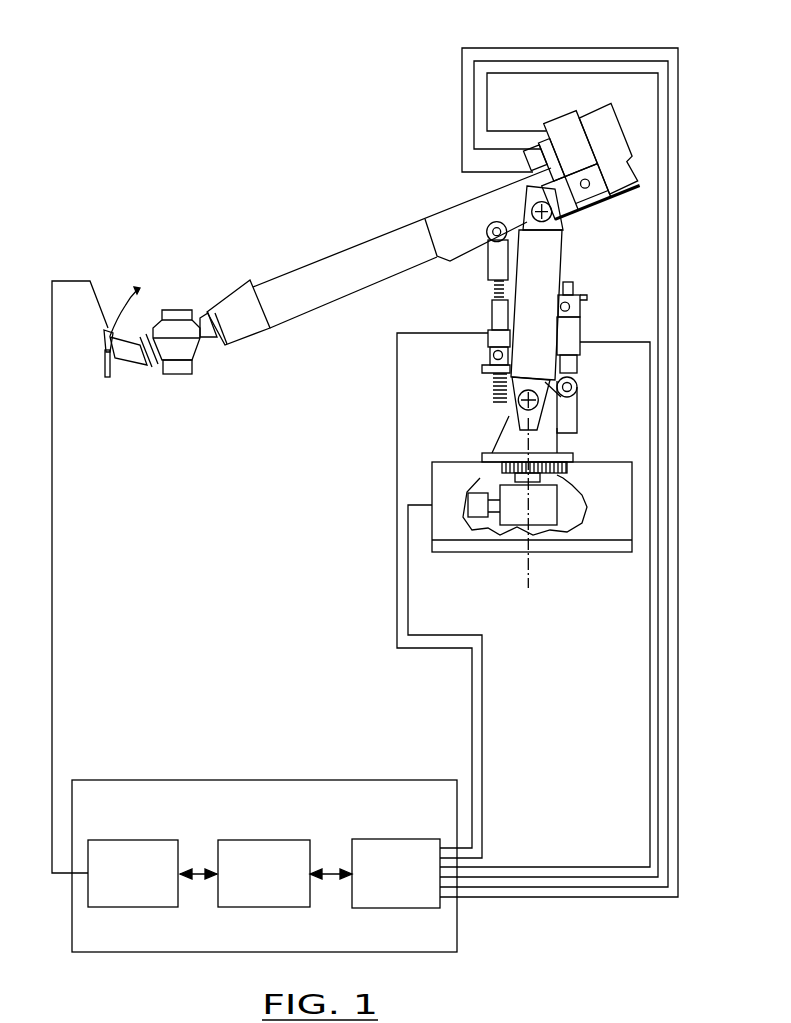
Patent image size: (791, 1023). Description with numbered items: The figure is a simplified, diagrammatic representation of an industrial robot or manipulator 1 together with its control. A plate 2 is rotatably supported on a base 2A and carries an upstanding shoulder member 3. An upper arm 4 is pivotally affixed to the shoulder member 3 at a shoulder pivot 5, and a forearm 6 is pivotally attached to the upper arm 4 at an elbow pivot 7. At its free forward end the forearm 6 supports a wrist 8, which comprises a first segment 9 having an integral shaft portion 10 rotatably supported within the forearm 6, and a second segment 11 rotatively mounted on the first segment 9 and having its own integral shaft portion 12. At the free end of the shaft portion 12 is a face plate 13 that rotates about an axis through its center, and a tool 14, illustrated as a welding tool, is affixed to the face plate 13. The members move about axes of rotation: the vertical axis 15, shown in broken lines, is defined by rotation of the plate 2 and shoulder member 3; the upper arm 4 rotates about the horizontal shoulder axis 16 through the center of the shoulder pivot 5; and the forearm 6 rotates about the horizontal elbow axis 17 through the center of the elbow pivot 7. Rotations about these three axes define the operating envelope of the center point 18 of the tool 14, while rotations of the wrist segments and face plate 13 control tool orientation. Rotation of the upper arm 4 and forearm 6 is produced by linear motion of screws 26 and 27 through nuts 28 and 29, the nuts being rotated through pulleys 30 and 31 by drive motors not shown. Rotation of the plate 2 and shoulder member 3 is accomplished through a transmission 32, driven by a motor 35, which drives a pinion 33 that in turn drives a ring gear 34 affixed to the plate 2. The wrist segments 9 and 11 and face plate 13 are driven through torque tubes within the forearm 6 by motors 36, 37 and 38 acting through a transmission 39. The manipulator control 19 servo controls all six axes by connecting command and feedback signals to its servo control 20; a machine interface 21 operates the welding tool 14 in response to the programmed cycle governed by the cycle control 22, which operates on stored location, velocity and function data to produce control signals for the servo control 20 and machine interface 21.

The manipulator 1 is at (258, 113).
The plate 2 is at (567, 457).
The base 2A is at (587, 462).
The shoulder member 3 is at (563, 405).
The upper arm 4 is at (544, 296).
The shoulder pivot 5 is at (527, 405).
The forearm 6 is at (278, 285).
The elbow pivot 7 is at (560, 218).
The wrist 8 is at (183, 310).
The first segment 9 is at (176, 320).
The shaft portion 10 is at (212, 338).
The second segment 11 is at (187, 350).
The shaft portion 12 is at (157, 364).
The face plate 13 is at (141, 335).
The tool 14 is at (108, 347).
The vertical axis 15 is at (532, 567).
The shoulder axis 16 is at (533, 410).
The elbow axis 17 is at (544, 213).
The center point 18 is at (108, 377).
The manipulator control 19 is at (238, 780).
The servo control 20 is at (380, 840).
The machine interface 21 is at (130, 845).
The cycle control 22 is at (260, 898).
The screw 26 is at (570, 282).
The screw 27 is at (495, 290).
The nut 28 is at (575, 343).
The nut 29 is at (488, 337).
The pulley 30 is at (587, 297).
The pulley 31 is at (482, 367).
The transmission 32 is at (515, 527).
The pinion 33 is at (543, 480).
The ring gear 34 is at (567, 470).
The motor 35 is at (482, 513).
The motor 36 is at (565, 122).
The motor 37 is at (543, 133).
The motor 38 is at (540, 133).
The transmission 39 is at (613, 117).